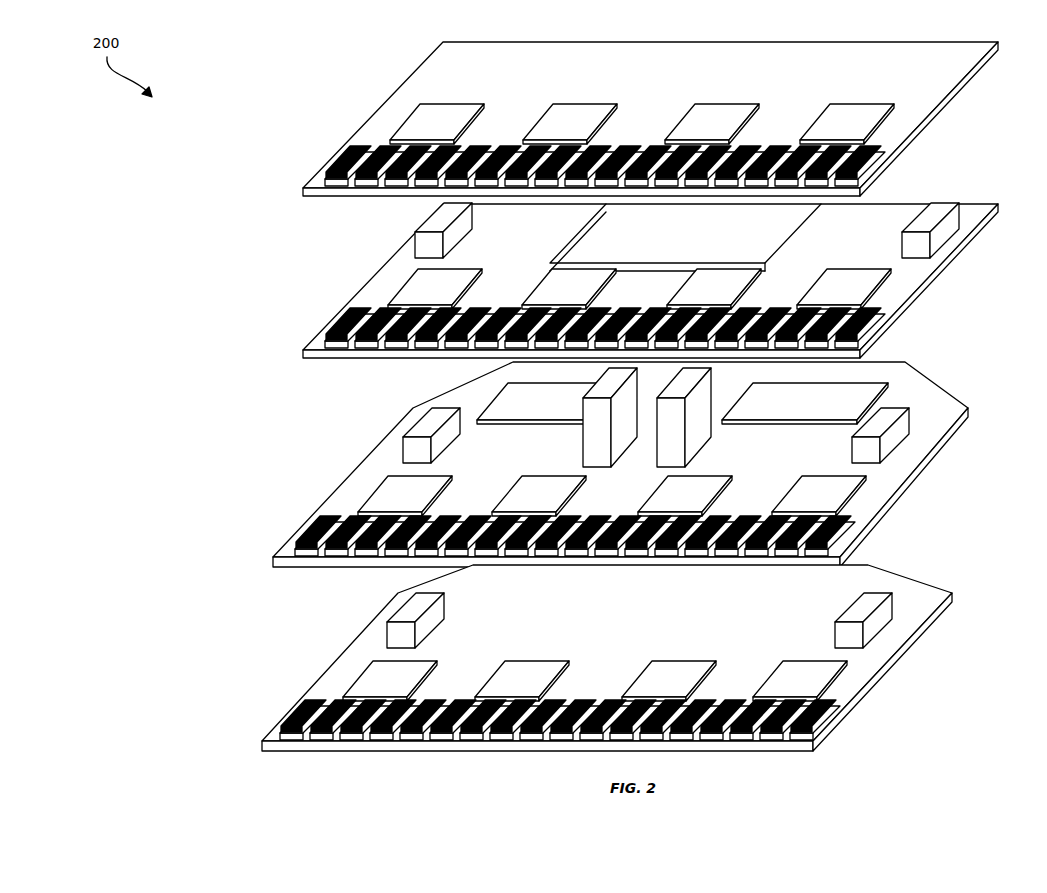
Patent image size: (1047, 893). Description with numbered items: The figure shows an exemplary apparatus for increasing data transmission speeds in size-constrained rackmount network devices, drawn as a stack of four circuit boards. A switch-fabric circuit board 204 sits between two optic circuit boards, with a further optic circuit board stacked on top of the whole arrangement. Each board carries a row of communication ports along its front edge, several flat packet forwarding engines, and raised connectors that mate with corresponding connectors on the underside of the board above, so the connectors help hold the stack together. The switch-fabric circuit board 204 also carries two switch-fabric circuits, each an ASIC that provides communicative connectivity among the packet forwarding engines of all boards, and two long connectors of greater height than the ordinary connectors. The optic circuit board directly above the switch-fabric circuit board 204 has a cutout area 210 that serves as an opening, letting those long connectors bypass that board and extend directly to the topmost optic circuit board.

The switch-fabric circuit board 204 is at (352, 473).
The cutout area 210 is at (580, 245).